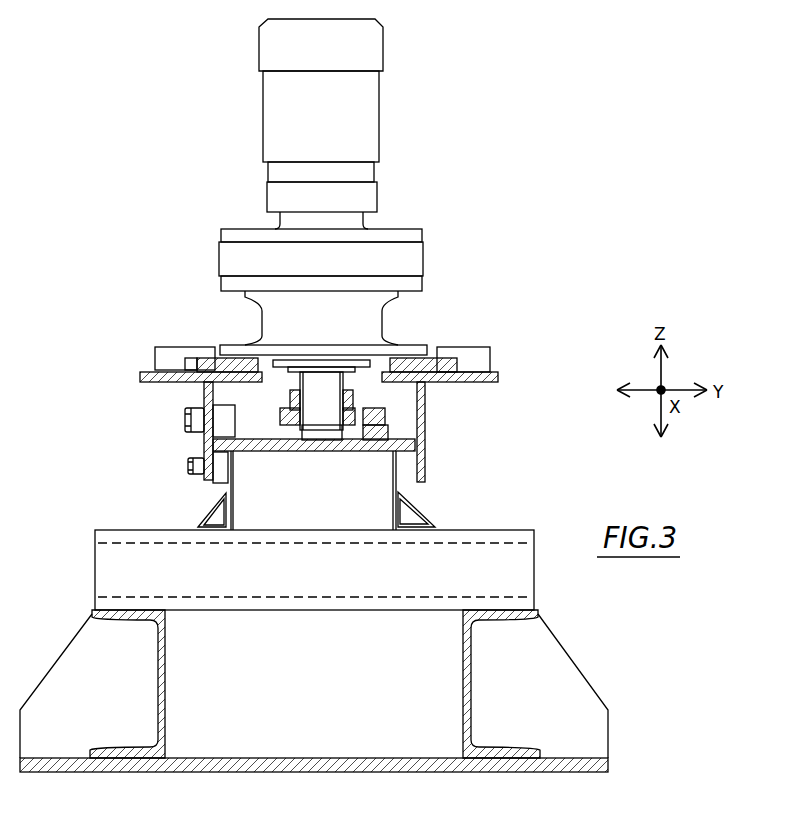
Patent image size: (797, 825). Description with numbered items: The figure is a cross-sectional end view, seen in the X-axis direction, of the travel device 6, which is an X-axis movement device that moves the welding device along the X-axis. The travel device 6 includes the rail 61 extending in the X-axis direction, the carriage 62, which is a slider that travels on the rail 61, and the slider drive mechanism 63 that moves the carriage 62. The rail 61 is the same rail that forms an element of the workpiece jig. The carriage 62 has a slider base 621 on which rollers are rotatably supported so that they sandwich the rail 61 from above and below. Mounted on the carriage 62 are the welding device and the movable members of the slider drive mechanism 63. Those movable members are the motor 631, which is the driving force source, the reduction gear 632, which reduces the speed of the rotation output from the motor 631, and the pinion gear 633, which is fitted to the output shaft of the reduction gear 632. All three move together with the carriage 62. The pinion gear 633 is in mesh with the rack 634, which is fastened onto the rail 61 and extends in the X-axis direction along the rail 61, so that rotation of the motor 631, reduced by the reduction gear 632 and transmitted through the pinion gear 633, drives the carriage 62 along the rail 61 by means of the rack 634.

The travel device 6 is at (314, 395).
The rail 61 is at (403, 452).
The carriage 62 is at (296, 408).
The slider base 621 is at (140, 373).
The slider drive mechanism 63 is at (339, 229).
The motor 631 is at (379, 101).
The reduction gear 632 is at (423, 260).
The pinion gear 633 is at (283, 418).
The rack 634 is at (385, 418).